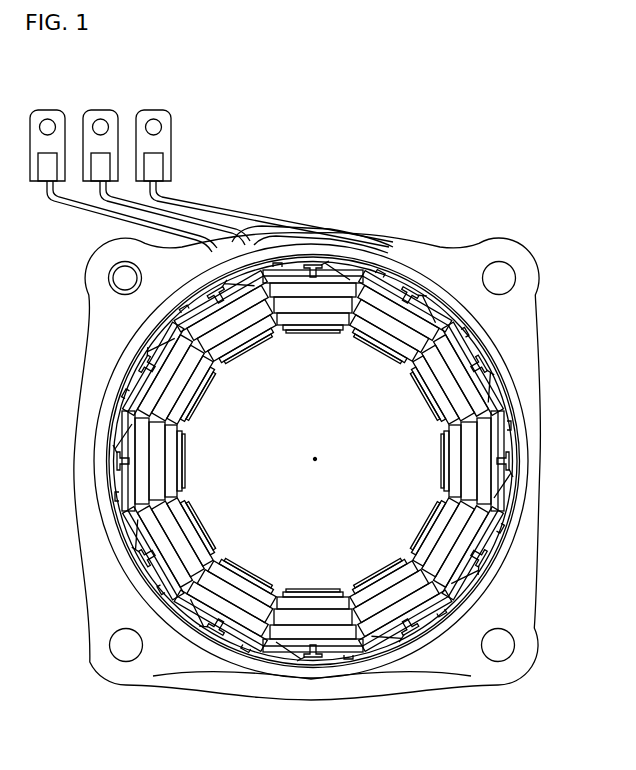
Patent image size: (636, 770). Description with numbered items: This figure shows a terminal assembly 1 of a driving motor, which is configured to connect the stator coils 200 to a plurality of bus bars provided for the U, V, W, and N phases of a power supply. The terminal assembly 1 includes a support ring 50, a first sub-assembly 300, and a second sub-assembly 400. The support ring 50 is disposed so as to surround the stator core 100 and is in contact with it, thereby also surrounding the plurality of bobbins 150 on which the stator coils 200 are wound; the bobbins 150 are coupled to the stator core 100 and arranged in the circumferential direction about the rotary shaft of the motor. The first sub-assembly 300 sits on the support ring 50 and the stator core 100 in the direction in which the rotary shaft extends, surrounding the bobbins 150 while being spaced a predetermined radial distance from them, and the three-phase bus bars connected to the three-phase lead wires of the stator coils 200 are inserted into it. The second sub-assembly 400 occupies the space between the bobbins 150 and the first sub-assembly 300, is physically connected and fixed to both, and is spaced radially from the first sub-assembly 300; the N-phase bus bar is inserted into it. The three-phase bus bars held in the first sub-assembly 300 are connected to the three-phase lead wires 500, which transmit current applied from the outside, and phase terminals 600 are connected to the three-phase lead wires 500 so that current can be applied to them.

The terminal assembly 1 is at (428, 191).
The support ring 50 is at (533, 403).
The stator core 100 is at (364, 461).
The bobbins 150 is at (363, 461).
The stator coils 200 is at (366, 461).
The first sub-assembly 300 is at (364, 461).
The second sub-assembly 400 is at (358, 461).
The three-phase lead wires 500 is at (273, 228).
The phase terminals 600 is at (186, 119).